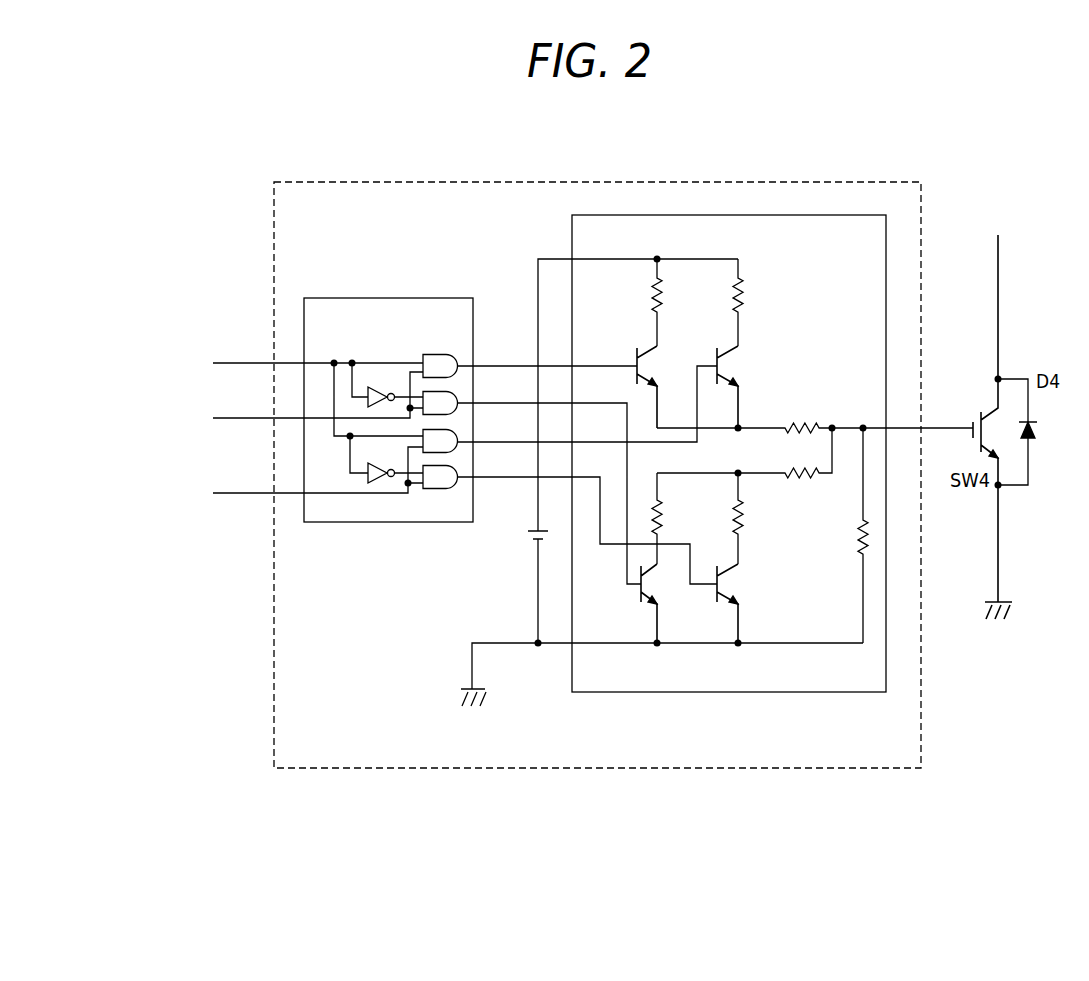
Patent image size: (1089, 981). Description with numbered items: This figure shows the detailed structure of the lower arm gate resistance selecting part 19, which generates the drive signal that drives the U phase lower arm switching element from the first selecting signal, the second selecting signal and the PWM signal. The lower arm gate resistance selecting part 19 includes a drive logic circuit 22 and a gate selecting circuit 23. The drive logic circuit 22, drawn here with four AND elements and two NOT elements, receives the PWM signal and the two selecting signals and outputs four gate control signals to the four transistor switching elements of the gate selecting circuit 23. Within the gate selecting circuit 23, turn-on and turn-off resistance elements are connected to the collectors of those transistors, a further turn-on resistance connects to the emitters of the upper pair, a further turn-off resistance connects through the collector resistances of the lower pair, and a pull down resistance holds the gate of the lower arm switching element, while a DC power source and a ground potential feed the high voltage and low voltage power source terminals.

The lower arm gate resistance selecting part 19 is at (767, 768).
The drive logic circuit 22 is at (400, 298).
The gate selecting circuit 23 is at (732, 691).